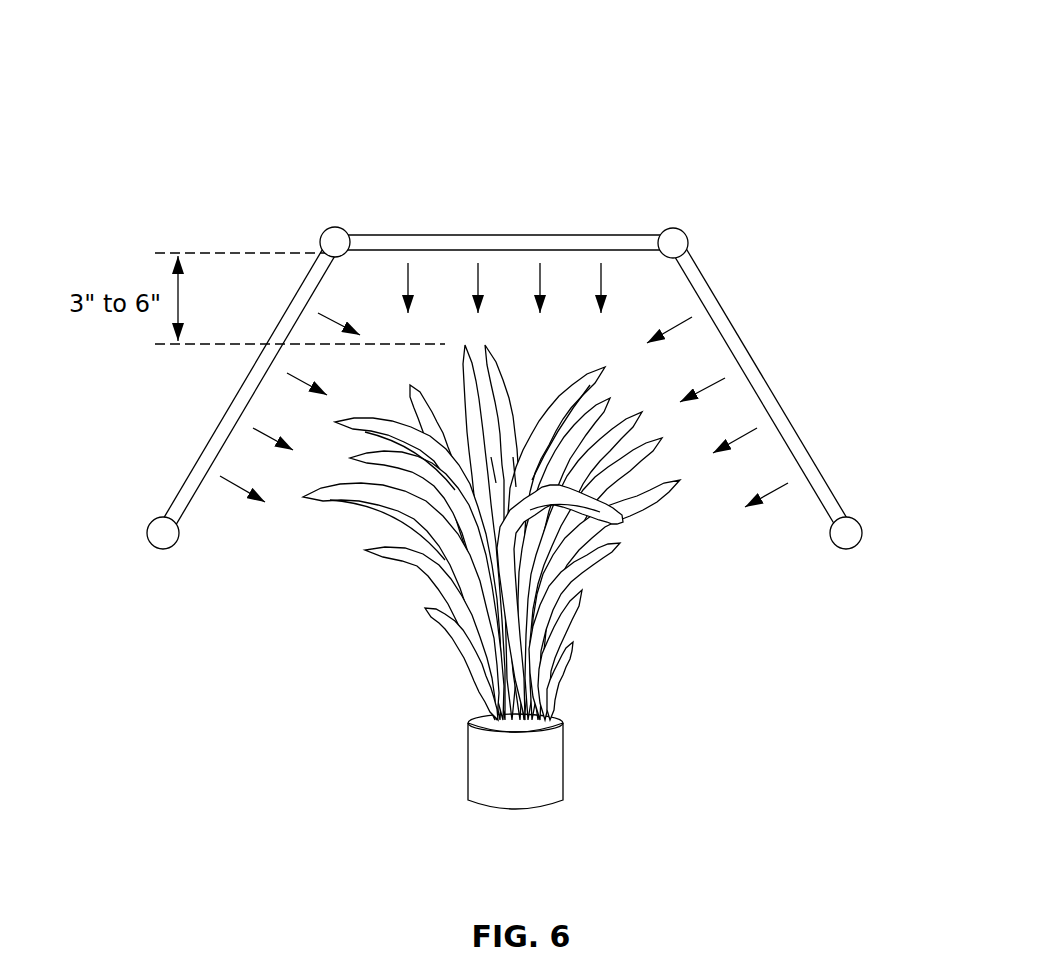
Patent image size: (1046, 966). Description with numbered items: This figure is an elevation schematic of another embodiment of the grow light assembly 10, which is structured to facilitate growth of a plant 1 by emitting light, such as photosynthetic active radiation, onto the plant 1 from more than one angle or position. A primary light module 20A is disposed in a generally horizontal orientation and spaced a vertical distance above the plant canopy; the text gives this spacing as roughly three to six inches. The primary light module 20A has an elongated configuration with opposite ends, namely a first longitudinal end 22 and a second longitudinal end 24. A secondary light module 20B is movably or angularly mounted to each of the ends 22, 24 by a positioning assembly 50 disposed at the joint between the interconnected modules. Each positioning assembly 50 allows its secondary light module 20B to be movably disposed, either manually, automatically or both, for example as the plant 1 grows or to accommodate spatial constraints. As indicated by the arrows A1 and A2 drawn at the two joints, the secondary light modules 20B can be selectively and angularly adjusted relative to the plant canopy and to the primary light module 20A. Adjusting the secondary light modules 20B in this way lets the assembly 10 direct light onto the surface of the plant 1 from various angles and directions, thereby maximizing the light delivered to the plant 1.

The grow light assembly 10 is at (450, 133).
The primary light module 20A is at (560, 234).
The secondary light module 20B is at (212, 437).
The first longitudinal end 22 is at (350, 232).
The second longitudinal end 24 is at (660, 232).
The positioning assembly 50 is at (330, 245).
The arrow A1 is at (292, 240).
The arrow A2 is at (716, 240).
The plant 1 is at (358, 540).